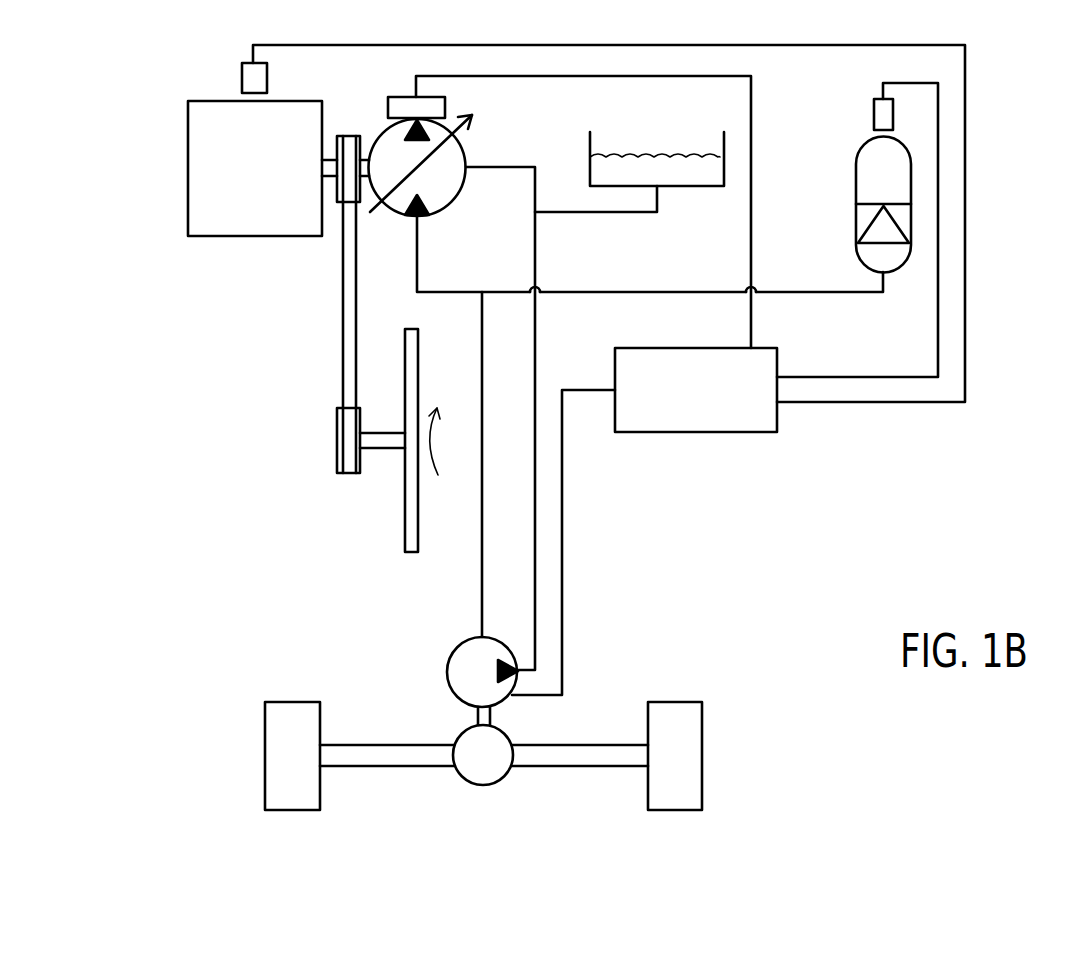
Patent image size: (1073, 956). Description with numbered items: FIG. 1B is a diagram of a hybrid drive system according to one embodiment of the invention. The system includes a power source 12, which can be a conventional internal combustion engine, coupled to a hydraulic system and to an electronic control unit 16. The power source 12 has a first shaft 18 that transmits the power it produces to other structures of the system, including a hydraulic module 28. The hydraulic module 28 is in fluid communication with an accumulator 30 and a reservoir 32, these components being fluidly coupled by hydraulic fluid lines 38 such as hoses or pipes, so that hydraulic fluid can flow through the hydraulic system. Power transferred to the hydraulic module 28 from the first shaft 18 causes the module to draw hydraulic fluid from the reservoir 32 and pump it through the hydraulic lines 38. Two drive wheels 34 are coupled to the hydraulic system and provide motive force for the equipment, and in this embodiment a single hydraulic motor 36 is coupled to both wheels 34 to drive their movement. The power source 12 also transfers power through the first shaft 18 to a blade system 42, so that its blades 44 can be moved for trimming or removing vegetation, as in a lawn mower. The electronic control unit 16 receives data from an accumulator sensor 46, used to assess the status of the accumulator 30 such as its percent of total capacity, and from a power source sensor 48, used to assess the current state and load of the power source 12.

The power source 12 is at (188, 164).
The electronic control unit 16 is at (695, 348).
The first shaft 18 is at (328, 158).
The hydraulic module 28 is at (466, 150).
The accumulator 30 is at (856, 204).
The reservoir 32 is at (692, 186).
The drive wheel 34 is at (265, 760).
The hydraulic motor 36 is at (458, 646).
The hydraulic fluid lines 38 is at (417, 255).
The blade system 42 is at (380, 484).
The blades 44 is at (405, 528).
The accumulator sensor 46 is at (874, 118).
The power source sensor 48 is at (242, 79).